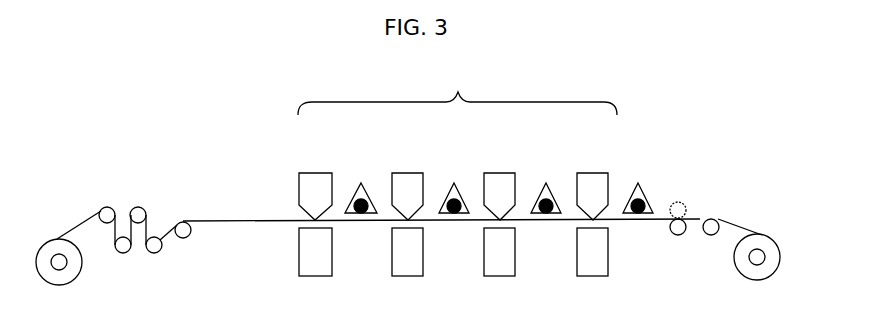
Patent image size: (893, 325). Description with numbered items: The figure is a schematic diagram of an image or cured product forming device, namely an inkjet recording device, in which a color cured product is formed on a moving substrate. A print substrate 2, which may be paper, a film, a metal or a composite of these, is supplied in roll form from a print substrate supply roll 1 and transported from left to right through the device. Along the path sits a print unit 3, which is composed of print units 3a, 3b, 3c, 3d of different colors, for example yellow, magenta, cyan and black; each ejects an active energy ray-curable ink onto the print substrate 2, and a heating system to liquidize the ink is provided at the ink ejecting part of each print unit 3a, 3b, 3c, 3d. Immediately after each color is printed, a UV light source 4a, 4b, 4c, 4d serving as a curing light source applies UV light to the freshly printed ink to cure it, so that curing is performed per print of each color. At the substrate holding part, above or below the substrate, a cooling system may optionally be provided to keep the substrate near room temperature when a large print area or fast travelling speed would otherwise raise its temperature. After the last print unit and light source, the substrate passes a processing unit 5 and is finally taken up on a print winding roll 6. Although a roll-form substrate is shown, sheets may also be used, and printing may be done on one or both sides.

The print substrate supply roll 1 is at (66, 266).
The print substrate 2 is at (215, 219).
The print unit 3 is at (463, 86).
The print unit 3a is at (312, 182).
The print unit 3b is at (404, 182).
The print unit 3c is at (496, 182).
The print unit 3d is at (589, 182).
The UV light source 4a is at (362, 186).
The UV light source 4b is at (455, 186).
The UV light source 4c is at (547, 186).
The UV light source 4d is at (639, 186).
The processing unit 5 is at (692, 195).
The print winding roll 6 is at (755, 257).